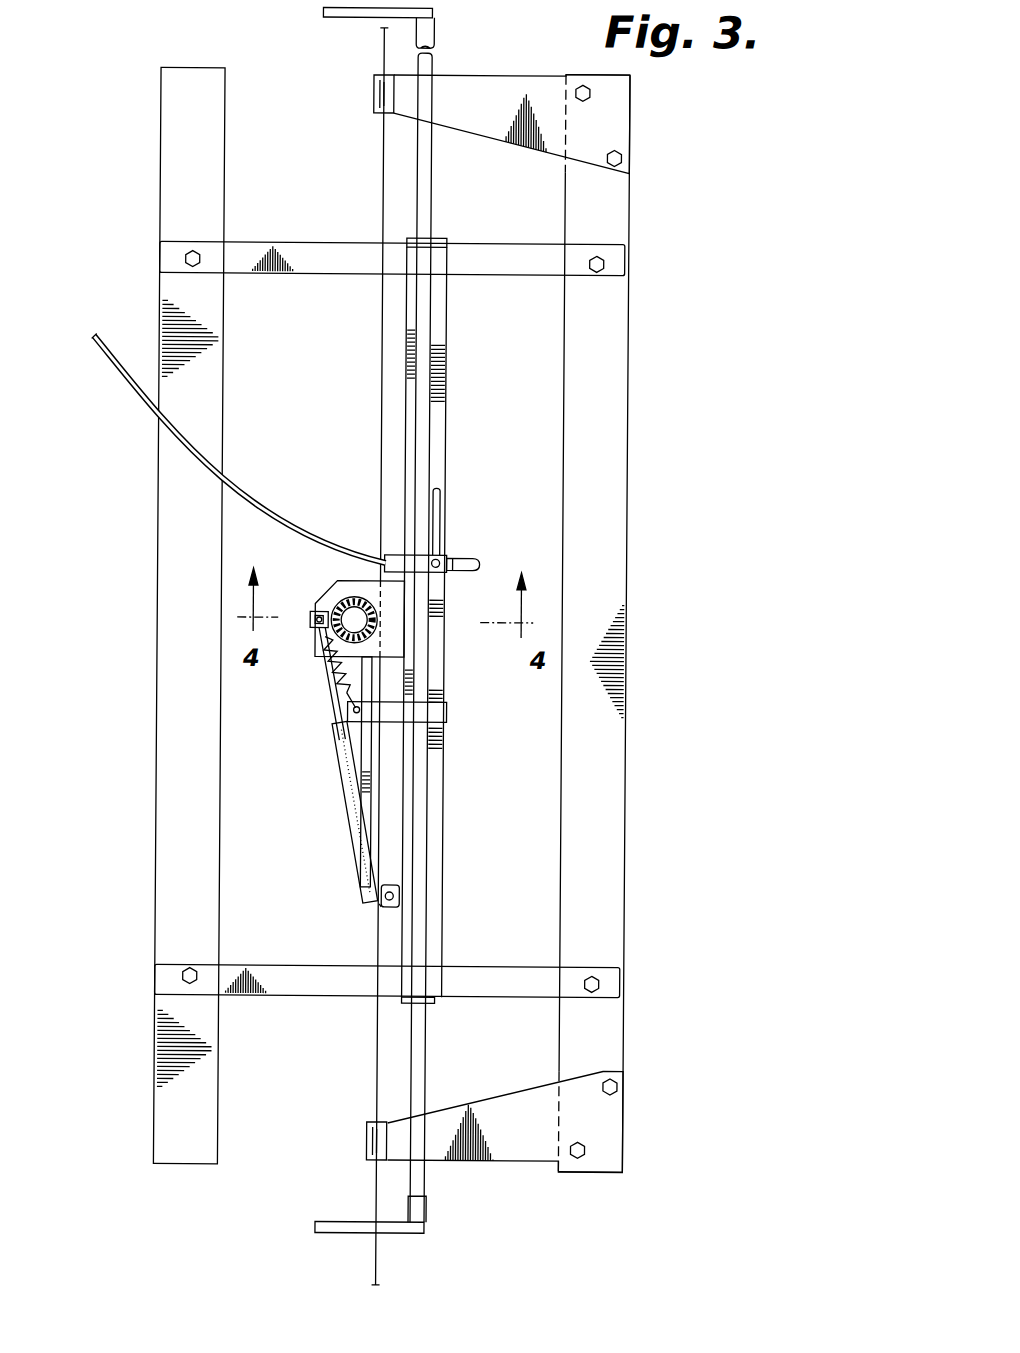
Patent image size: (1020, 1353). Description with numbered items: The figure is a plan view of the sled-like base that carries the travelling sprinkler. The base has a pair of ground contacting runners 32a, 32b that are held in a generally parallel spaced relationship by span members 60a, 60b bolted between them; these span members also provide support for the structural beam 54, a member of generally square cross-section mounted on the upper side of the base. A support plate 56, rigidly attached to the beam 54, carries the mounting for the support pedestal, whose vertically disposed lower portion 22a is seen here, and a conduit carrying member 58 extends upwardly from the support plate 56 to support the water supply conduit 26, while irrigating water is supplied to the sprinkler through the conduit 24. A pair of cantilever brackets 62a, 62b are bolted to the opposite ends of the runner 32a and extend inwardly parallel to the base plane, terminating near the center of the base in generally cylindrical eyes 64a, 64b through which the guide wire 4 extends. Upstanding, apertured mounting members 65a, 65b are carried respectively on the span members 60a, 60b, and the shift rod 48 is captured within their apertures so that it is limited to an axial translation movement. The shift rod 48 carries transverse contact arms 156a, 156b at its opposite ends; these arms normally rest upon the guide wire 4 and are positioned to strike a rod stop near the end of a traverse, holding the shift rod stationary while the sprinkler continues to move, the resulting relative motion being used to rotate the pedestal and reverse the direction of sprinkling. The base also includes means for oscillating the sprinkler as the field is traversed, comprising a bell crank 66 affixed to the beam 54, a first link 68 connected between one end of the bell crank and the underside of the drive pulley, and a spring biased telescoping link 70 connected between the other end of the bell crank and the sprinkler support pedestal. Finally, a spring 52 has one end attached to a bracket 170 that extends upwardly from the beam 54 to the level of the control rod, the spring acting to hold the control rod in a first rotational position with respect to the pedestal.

The guide wire 4 is at (380, 184).
The lower portion of the support pedestal 22a is at (348, 596).
The conduit 24 is at (463, 560).
The spray 26 is at (182, 450).
The runner 32a is at (612, 612).
The runner 32b is at (182, 653).
The shift rod 48 is at (424, 30).
The spring 52 is at (340, 683).
The structural beam 54 is at (433, 825).
The support plate 56 is at (403, 638).
The conduit carrying member 58 is at (447, 553).
The span member 60a is at (318, 258).
The span member 60b is at (527, 977).
The cantilever bracket 62a is at (605, 110).
The cantilever bracket 62b is at (590, 1117).
The cylindrical eye 64a is at (372, 82).
The cylindrical eye 64b is at (370, 1147).
The apertured mounting member 65a is at (440, 240).
The apertured mounting member 65b is at (440, 1008).
The bell crank 66 is at (356, 911).
The first link 68 is at (363, 763).
The spring biased telescoping link 70 is at (352, 819).
The transverse contact arm 156a is at (343, 18).
The transverse contact arm 156b is at (340, 1233).
The bracket 170 is at (435, 712).